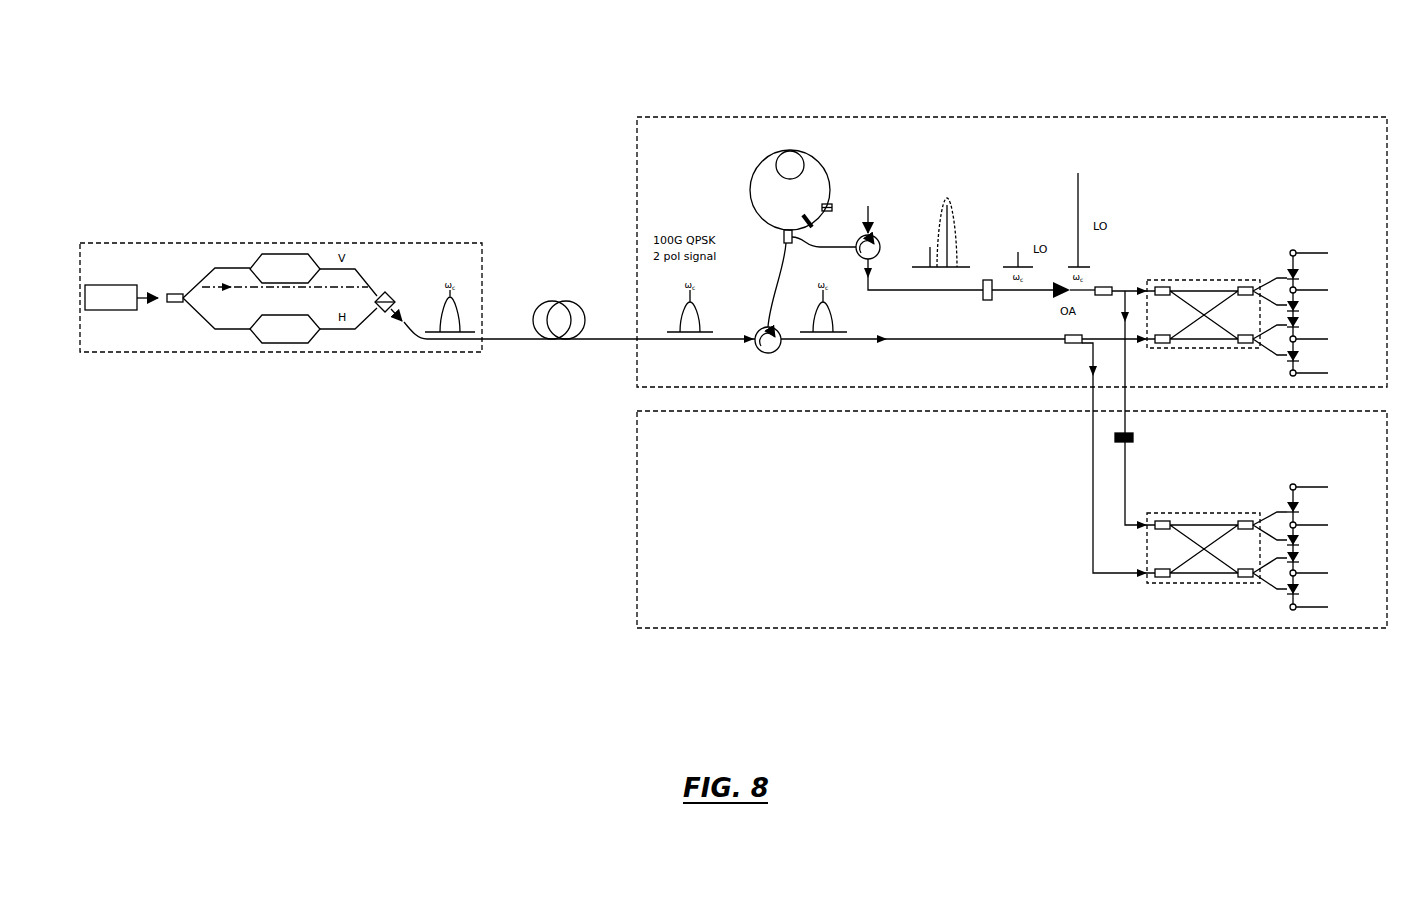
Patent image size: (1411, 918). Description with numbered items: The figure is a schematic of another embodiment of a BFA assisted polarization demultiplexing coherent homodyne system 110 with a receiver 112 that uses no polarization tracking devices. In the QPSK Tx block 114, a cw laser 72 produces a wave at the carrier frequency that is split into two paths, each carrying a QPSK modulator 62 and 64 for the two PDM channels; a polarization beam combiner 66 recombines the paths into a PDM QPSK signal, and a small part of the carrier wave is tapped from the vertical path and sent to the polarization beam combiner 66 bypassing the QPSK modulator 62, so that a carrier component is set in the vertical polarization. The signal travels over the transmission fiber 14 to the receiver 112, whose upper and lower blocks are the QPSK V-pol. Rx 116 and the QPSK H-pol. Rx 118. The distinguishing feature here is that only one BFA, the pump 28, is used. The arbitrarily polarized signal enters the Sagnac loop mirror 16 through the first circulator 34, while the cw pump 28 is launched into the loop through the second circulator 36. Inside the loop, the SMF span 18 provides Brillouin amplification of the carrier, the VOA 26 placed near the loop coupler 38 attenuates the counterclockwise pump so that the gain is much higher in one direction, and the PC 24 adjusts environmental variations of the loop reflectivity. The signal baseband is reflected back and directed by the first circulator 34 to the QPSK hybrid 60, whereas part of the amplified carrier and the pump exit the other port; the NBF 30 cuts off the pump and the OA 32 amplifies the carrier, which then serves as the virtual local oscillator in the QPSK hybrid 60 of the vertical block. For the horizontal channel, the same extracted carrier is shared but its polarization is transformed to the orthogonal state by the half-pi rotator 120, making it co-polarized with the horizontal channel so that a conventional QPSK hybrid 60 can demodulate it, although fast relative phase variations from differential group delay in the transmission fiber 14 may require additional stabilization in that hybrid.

The BFA assisted polarization demultiplexing coherent system 110 is at (751, 60).
The receiver 112 is at (1025, 82).
The QPSK Tx block 114 is at (413, 243).
The QPSK V-polarization receiver 116 is at (1249, 117).
The QPSK H-polarization receiver 118 is at (1257, 628).
The π/2 rotator 120 is at (1164, 420).
The cw laser 72 is at (115, 285).
The QPSK modulator 62 is at (283, 254).
The QPSK modulator 64 is at (283, 343).
The polarization beam combiner 66 is at (389, 332).
The transmission fiber 14 is at (566, 242).
The first circulator 34 is at (766, 325).
The loop coupler 38 is at (784, 235).
The SMF span 18 is at (793, 124).
The Sagnac loop mirror 16 is at (828, 152).
The VOA 26 is at (779, 196).
The PC 24 is at (829, 203).
The pump 28 is at (897, 166).
The second circulator 36 is at (893, 230).
The NBF 30 is at (990, 264).
The OA 32 is at (1073, 324).
The QPSK hybrid 60 is at (1244, 258).